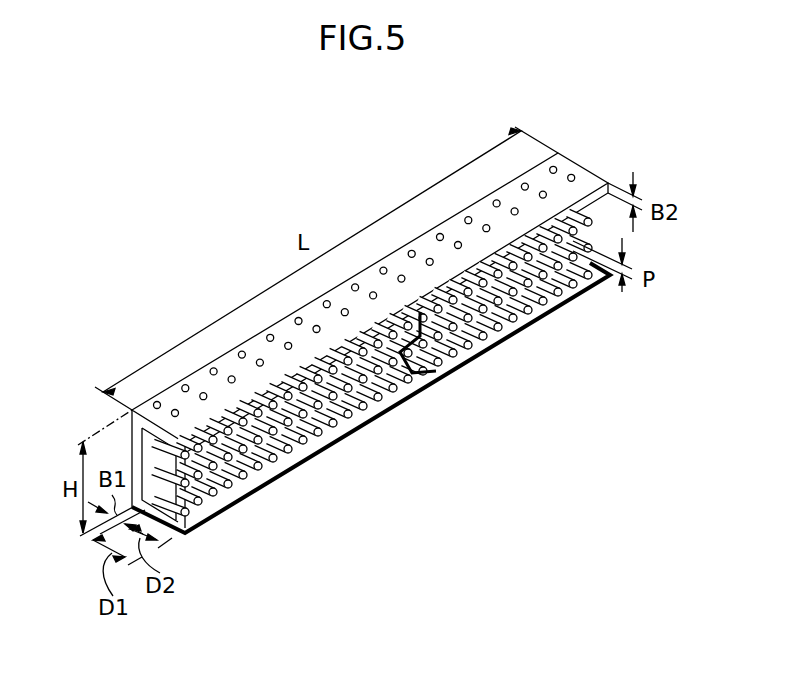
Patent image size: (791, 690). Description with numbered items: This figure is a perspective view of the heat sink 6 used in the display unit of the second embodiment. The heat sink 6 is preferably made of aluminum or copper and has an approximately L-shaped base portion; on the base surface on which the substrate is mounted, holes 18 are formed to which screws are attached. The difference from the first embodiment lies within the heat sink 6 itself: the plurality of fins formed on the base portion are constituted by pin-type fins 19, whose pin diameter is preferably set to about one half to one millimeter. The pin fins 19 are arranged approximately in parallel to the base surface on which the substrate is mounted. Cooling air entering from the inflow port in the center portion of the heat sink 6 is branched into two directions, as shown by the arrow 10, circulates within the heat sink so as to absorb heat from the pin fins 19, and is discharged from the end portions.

The heat sink 6 is at (583, 178).
The arrow 10 is at (437, 382).
The hole 18 is at (240, 352).
The pin-type fin 19 is at (517, 333).